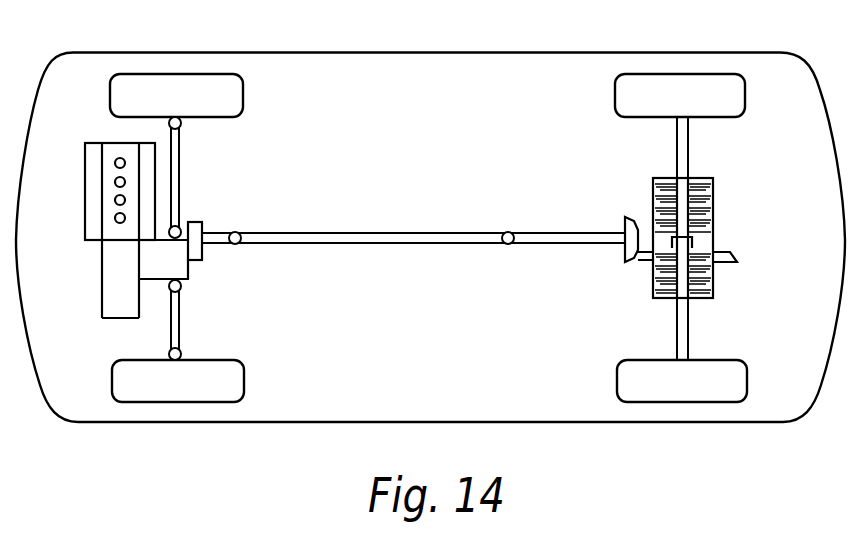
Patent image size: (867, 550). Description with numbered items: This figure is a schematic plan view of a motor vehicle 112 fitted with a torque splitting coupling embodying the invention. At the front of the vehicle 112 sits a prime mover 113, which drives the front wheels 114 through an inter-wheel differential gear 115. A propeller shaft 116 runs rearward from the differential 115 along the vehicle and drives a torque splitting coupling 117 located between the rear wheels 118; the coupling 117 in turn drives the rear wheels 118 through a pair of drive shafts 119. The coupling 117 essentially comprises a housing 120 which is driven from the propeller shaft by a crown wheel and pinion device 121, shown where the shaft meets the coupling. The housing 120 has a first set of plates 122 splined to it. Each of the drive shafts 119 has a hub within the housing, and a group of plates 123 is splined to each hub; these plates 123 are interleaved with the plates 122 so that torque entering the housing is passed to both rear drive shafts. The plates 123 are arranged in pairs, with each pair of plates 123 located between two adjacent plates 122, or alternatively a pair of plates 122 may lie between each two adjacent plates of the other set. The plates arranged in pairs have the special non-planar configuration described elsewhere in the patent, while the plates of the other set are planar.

The vehicle 112 is at (365, 77).
The prime mover 113 is at (112, 150).
The front wheels 114 is at (172, 80).
The inter-wheel differential gear 115 is at (172, 266).
The propeller shaft 116 is at (402, 240).
The torque splitting coupling 117 is at (661, 172).
The rear wheels 118 is at (688, 82).
The drive shafts 119 is at (687, 137).
The housing 120 is at (652, 266).
The crown wheel and pinion device 121 is at (630, 254).
The first set of plates 122 is at (658, 197).
The plates 123 is at (715, 190).